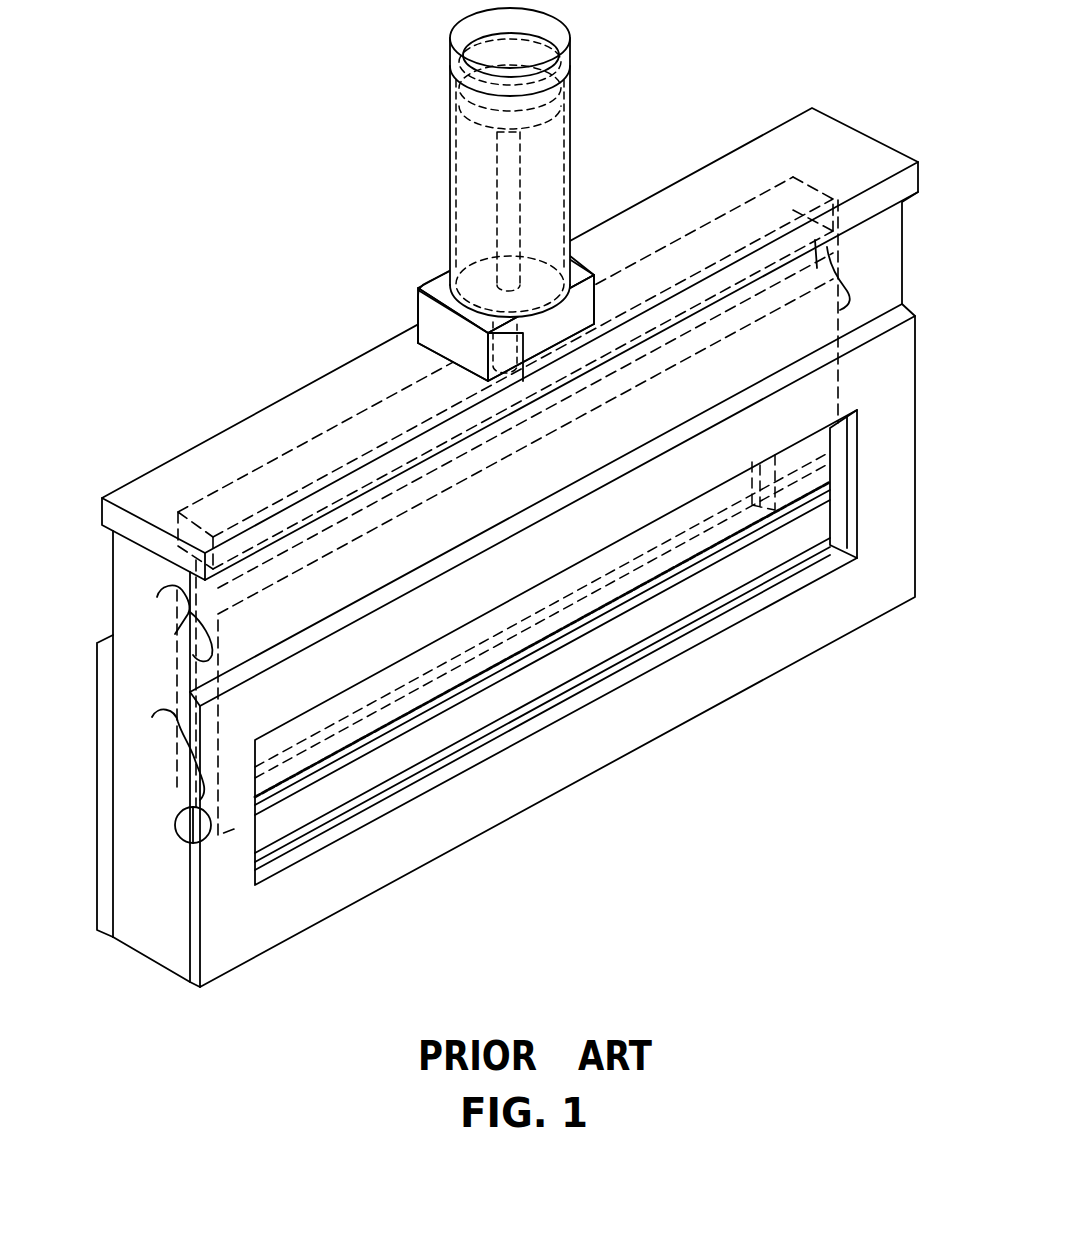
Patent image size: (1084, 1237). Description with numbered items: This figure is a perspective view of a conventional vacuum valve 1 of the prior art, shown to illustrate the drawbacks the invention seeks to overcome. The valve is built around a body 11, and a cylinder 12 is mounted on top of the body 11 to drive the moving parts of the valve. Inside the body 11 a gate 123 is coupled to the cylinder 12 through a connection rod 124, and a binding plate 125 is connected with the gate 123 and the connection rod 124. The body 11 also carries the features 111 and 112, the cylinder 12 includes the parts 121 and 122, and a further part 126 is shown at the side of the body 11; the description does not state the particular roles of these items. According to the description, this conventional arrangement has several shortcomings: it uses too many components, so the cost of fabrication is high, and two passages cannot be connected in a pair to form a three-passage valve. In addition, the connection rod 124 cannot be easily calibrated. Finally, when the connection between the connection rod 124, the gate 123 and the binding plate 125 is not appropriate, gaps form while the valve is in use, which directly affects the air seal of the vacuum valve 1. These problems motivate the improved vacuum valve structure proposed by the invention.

The vacuum valve 1 is at (521, 549).
The body 11 is at (521, 653).
The opening 111 is at (766, 567).
The slot 112 is at (700, 623).
The cylinder 12 is at (480, 194).
The cylinder 121 is at (578, 110).
The piston rod 122 is at (497, 218).
The gate 123 is at (208, 513).
The connection rod 124 is at (158, 608).
The binding plate 125 is at (632, 607).
The roller 126 is at (178, 835).